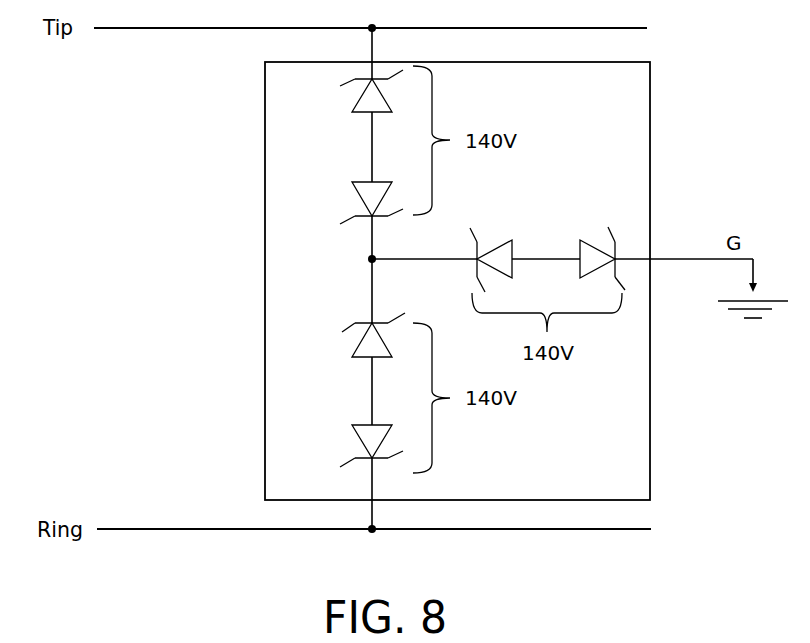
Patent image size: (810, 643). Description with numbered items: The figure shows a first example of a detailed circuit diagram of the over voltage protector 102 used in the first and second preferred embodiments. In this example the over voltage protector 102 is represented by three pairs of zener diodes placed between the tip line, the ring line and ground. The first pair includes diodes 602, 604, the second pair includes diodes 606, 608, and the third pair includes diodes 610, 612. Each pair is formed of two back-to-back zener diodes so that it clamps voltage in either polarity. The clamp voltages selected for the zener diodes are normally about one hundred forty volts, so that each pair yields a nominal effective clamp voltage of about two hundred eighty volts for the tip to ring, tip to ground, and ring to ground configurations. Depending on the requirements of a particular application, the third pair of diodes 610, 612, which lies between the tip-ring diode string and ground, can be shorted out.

The over voltage protector 102 is at (651, 444).
The zener diode 602 is at (355, 100).
The zener diode 604 is at (357, 195).
The zener diode 606 is at (355, 345).
The zener diode 608 is at (362, 443).
The zener diode 610 is at (495, 242).
The zener diode 612 is at (592, 238).